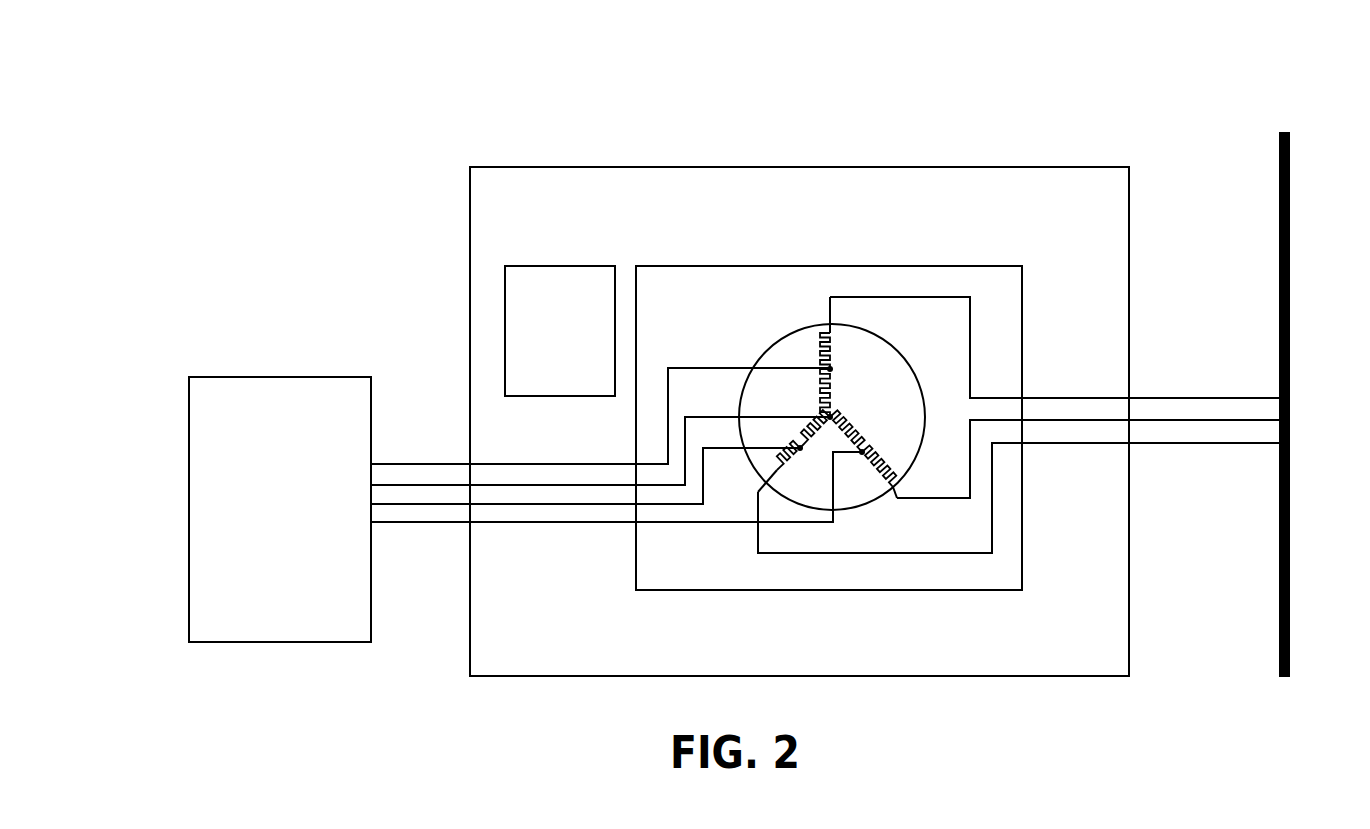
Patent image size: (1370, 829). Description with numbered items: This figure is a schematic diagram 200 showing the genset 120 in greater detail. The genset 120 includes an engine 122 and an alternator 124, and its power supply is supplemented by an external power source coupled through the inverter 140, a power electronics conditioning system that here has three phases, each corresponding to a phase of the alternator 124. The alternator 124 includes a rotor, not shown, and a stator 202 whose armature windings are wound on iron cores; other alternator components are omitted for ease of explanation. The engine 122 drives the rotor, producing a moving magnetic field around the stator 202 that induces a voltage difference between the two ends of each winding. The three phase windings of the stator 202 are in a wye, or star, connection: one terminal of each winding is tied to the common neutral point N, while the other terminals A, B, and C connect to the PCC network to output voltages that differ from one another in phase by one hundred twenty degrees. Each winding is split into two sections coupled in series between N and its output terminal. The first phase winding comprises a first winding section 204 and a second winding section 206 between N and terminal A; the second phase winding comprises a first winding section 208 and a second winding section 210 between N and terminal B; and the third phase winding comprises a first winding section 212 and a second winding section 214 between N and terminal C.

The power system 200 is at (340, 112).
The genset 120 is at (799, 421).
The engine 122 is at (560, 331).
The alternator 124 is at (957, 452).
The inverter 140 is at (280, 509).
The stator 202 is at (924, 452).
The first winding section 204 is at (832, 392).
The second winding section 206 is at (832, 348).
The first winding section 208 is at (855, 425).
The second winding section 210 is at (883, 455).
The first winding section 212 is at (806, 430).
The second winding section 214 is at (795, 450).